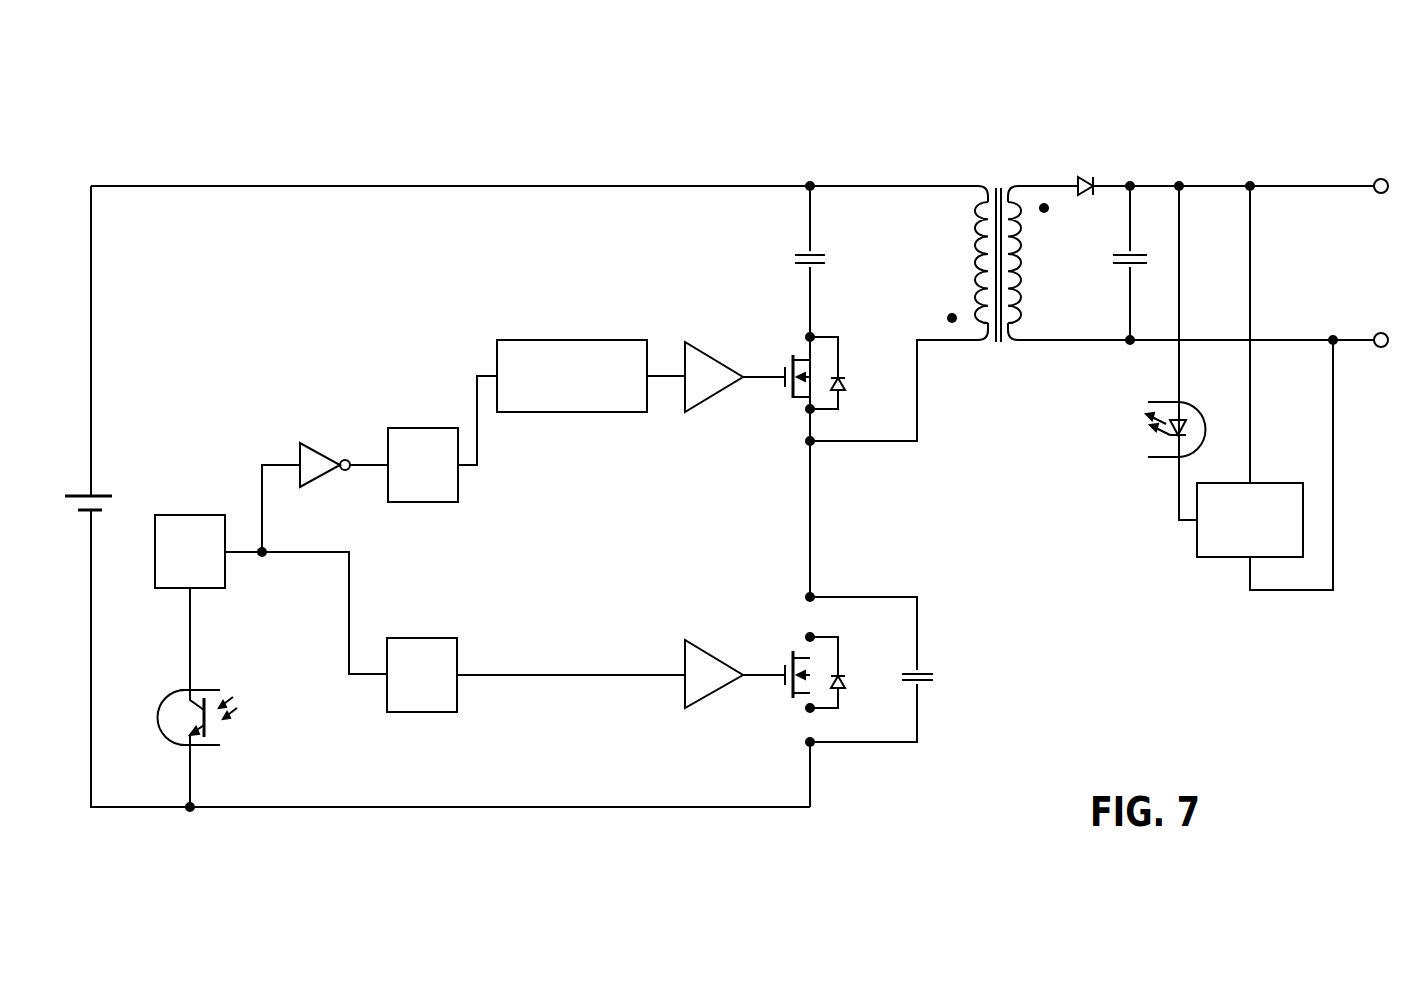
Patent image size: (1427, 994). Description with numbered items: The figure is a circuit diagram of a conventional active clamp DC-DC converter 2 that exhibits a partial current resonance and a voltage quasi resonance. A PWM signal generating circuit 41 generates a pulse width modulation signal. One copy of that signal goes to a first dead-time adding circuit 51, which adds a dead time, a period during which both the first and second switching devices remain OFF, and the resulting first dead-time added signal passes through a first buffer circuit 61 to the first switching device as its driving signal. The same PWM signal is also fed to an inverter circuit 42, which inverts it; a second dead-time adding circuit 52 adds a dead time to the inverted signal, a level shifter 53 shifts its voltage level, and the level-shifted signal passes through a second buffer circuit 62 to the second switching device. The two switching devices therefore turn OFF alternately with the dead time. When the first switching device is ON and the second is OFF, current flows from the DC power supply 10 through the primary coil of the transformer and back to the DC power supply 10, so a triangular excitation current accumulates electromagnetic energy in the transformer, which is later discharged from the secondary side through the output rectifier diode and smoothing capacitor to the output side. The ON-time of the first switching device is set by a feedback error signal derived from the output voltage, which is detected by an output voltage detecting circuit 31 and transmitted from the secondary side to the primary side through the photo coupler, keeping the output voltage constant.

The active clamp DC-DC converter 2 is at (498, 136).
The DC power supply 10 is at (107, 493).
The PWM signal generating circuit 41 is at (185, 515).
The inverter circuit 42 is at (322, 444).
The first dead-time adding circuit 51 is at (418, 638).
The second dead-time adding circuit 52 is at (412, 428).
The level shifter 53 is at (607, 340).
The first buffer circuit 61 is at (706, 647).
The second buffer circuit 62 is at (706, 348).
The output voltage detecting circuit 31 is at (1265, 483).